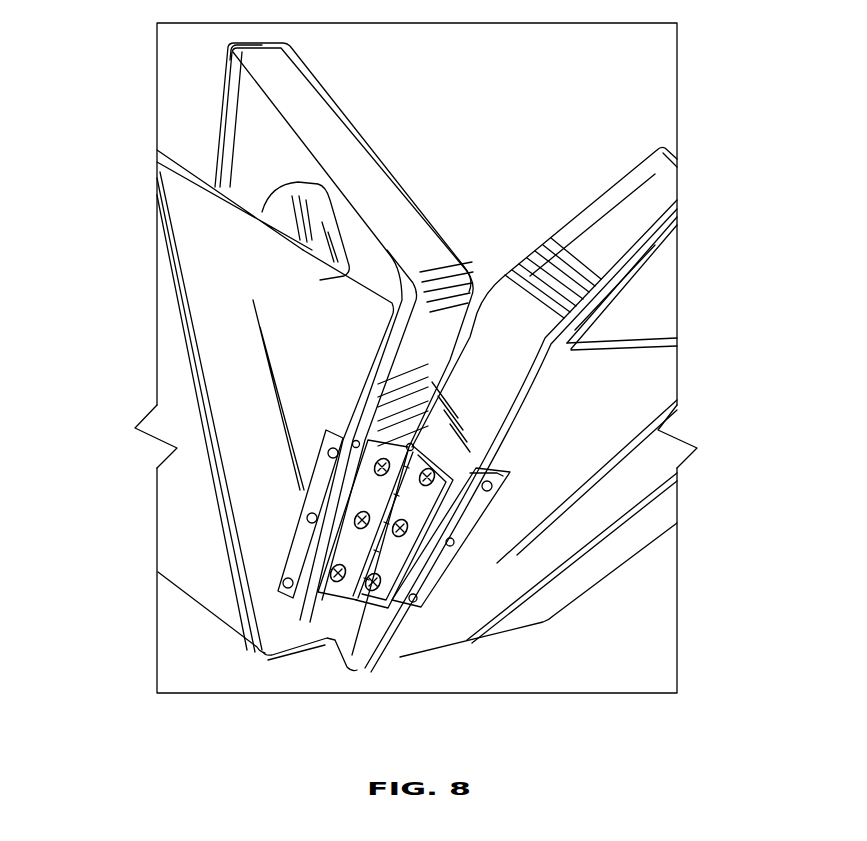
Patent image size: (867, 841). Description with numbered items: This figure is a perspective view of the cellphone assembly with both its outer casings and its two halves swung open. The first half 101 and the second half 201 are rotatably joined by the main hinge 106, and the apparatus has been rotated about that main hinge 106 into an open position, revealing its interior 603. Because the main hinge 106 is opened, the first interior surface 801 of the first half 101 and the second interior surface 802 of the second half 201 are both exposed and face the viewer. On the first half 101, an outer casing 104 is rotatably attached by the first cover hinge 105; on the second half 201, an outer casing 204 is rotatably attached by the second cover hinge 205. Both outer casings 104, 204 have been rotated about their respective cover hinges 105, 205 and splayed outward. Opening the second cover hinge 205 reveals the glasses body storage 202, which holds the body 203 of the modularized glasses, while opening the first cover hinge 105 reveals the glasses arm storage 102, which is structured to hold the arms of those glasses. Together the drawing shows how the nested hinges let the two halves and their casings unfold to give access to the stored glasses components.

The first half 101 is at (617, 212).
The glasses arm storage 102 is at (620, 276).
The outer casing 104 is at (640, 372).
The first cover hinge 105 is at (428, 578).
The main hinge 106 is at (353, 577).
The second half 201 is at (258, 62).
The glasses body storage 202 is at (257, 135).
The body of modularized glasses 203 is at (283, 213).
The outer casing 204 is at (196, 370).
The second cover hinge 205 is at (290, 573).
The interior 603 is at (497, 215).
The first interior surface 801 is at (597, 200).
The second interior surface 802 is at (377, 153).